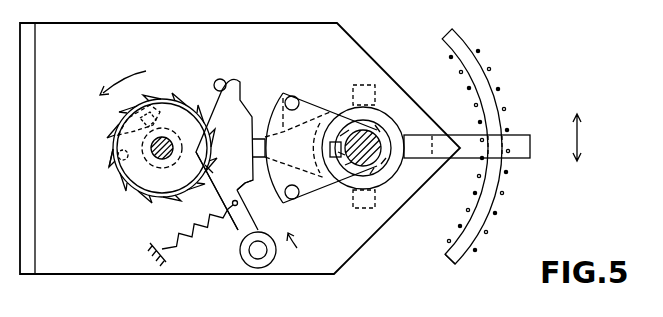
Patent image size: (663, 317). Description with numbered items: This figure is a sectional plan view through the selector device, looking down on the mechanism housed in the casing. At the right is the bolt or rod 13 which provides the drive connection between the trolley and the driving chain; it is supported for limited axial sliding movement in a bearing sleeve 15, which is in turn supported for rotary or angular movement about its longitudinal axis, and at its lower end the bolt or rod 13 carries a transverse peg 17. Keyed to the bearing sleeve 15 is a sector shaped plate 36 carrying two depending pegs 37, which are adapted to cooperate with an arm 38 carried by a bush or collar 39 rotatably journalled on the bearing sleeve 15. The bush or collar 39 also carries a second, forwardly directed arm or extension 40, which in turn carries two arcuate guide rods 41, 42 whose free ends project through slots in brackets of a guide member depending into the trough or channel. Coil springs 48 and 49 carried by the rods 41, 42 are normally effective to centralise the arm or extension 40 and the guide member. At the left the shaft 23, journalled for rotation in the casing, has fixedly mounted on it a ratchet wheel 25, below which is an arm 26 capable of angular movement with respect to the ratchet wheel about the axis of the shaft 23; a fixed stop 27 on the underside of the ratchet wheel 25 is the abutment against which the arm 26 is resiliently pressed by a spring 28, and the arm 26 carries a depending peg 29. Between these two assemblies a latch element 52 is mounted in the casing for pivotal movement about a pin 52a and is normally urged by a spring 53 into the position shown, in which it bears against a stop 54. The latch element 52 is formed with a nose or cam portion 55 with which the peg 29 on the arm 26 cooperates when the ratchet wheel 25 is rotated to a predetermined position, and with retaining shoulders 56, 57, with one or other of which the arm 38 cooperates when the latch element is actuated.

The bolt or rod 13 is at (368, 158).
The bearing sleeve 15 is at (380, 127).
The transverse peg 17 is at (366, 85).
The shaft 23 is at (166, 138).
The ratchet wheel 25 is at (111, 176).
The arm 26 is at (152, 158).
The fixed stop 27 is at (112, 153).
The spring 28 is at (146, 97).
The depending peg 29 is at (109, 122).
The sector shaped plate 36 is at (308, 100).
The depending pegs 37 is at (295, 96).
The arm 38 is at (281, 96).
The bush or collar 39 is at (398, 123).
The arm or extension 40 is at (473, 152).
The arcuate guide rod 41 is at (497, 110).
The arcuate guide rod 42 is at (441, 252).
The coil spring 48 is at (493, 83).
The coil spring 49 is at (466, 246).
The latch element 52 is at (236, 233).
The pin 52a is at (258, 262).
The spring 53 is at (190, 236).
The stop 54 is at (220, 79).
The nose or cam portion 55 is at (172, 168).
The retaining shoulder 56 is at (253, 90).
The retaining shoulder 57 is at (250, 185).